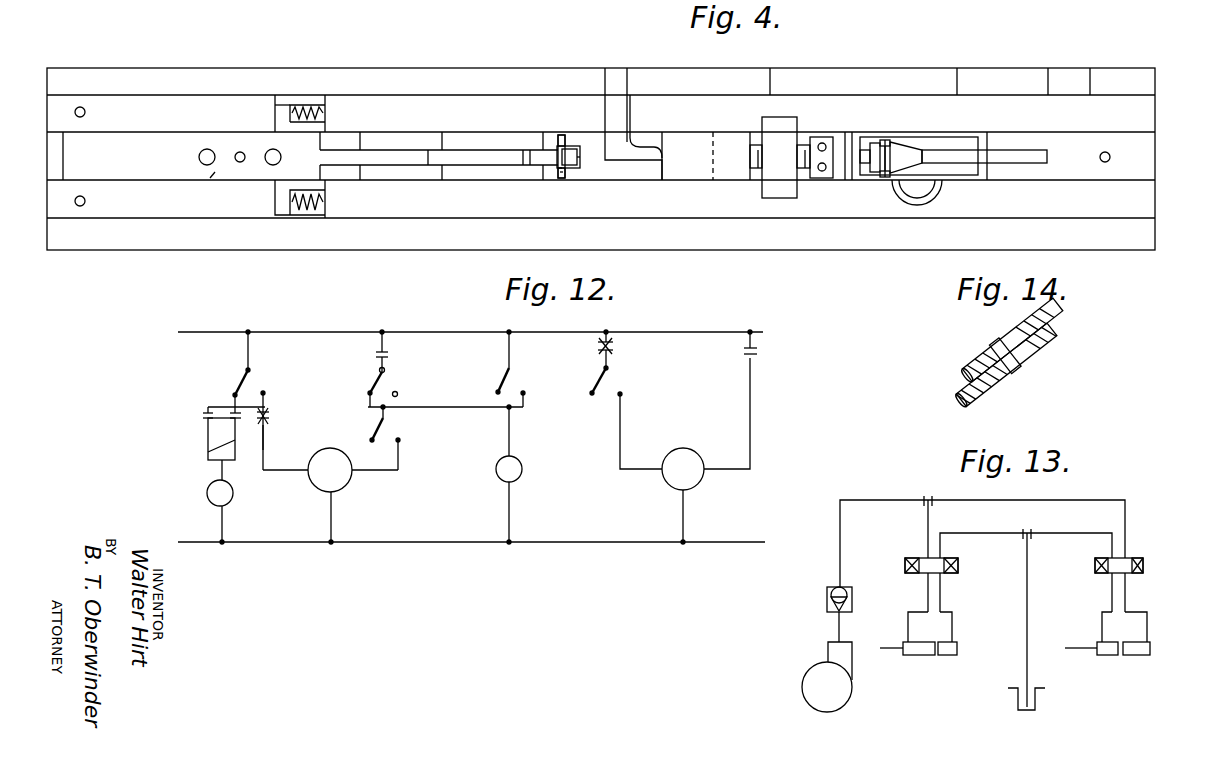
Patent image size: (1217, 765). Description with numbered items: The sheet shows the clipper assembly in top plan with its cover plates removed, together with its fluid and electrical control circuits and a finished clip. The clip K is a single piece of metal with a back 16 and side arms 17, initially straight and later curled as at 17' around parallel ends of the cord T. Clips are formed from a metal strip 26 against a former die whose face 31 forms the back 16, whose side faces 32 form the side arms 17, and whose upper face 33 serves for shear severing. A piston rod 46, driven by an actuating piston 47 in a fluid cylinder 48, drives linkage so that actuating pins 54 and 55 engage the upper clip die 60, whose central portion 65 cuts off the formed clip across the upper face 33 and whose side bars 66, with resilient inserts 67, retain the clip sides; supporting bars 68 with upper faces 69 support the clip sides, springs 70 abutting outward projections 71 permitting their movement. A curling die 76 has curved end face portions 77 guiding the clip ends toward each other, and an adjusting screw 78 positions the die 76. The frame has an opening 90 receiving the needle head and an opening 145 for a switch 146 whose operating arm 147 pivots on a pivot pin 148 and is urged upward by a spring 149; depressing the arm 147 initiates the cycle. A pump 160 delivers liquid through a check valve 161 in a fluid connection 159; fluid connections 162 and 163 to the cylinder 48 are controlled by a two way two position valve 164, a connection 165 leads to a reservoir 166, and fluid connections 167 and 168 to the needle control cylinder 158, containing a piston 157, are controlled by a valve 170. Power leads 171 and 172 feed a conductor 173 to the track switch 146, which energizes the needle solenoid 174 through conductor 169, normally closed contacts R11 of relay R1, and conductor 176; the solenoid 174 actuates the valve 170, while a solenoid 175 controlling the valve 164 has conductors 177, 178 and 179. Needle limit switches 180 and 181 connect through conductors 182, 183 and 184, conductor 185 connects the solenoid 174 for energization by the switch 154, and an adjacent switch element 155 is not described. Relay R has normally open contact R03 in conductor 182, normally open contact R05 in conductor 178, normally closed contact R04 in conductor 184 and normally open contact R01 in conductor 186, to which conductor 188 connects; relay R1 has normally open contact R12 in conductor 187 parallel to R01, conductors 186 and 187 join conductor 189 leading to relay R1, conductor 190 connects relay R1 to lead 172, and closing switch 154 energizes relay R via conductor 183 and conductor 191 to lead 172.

In FIG. 4, the back 16 is at (558, 140).
In FIG. 4, the side arms 17 is at (580, 141).
In FIG. 14, the curled side arms 17' is at (1020, 353).
In FIG. 4, the elongated metal strip 26 is at (560, 172).
In FIG. 4, the face 31 is at (558, 168).
In FIG. 4, the side faces 32 is at (575, 148).
In FIG. 4, the upper face 33 is at (580, 160).
In FIG. 13, the piston rod 46 is at (897, 646).
In FIG. 13, the actuating piston 47 is at (945, 655).
In FIG. 13, the fluid cylinder 48 is at (921, 655).
In FIG. 4, the actuating pin 54 is at (207, 150).
In FIG. 4, the actuating pin 55 is at (268, 164).
In FIG. 4, the upper clip die 60 is at (213, 174).
In FIG. 4, the central portion 65 is at (405, 155).
In FIG. 4, the side bars 66 is at (386, 174).
In FIG. 4, the resilient inserts 67 is at (350, 175).
In FIG. 4, the supporting bars 68 is at (468, 128).
In FIG. 4, the upper faces 69 is at (562, 142).
In FIG. 4, the springs 70 is at (308, 105).
In FIG. 4, the outward projections 71 is at (275, 100).
In FIG. 4, the curling die 76 is at (698, 148).
In FIG. 4, the curved end face portions 77 is at (657, 150).
In FIG. 4, the adjusting screw 78 is at (830, 137).
In FIG. 4, the opening 90 is at (616, 100).
In FIG. 4, the opening 145 is at (970, 137).
In FIG. 4, the switch 146 is at (916, 146).
In FIG. 12, the switch 146 is at (250, 378).
In FIG. 4, the operating arm 147 is at (1020, 156).
In FIG. 4, the pivot pin 148 is at (882, 140).
In FIG. 4, the spring 149 is at (888, 143).
In FIG. 12, the switch 154 is at (505, 380).
In FIG. 12, the switch blade 155 is at (386, 433).
In FIG. 13, the piston 157 is at (1128, 655).
In FIG. 13, the needle control cylinder 158 is at (1113, 655).
In FIG. 13, the fluid connection 159 is at (878, 500).
In FIG. 13, the pump 160 is at (851, 696).
In FIG. 13, the check valve 161 is at (827, 598).
In FIG. 13, the fluid connection 162 is at (928, 600).
In FIG. 13, the fluid connection 163 is at (940, 599).
In FIG. 13, the two way two position valve 164 is at (914, 558).
In FIG. 13, the connection 165 is at (1027, 623).
In FIG. 13, the reservoir 166 is at (1036, 700).
In FIG. 13, the fluid connection 167 is at (1112, 593).
In FIG. 13, the fluid connection 168 is at (1125, 592).
In FIG. 12, the conductor 169 is at (268, 436).
In FIG. 13, the two way two position valve 170 is at (1143, 561).
In FIG. 12, the power lead 171 is at (212, 332).
In FIG. 12, the power lead 172 is at (196, 542).
In FIG. 12, the conductor 173 is at (248, 354).
In FIG. 12, the needle solenoid 174 is at (345, 450).
In FIG. 12, the solenoid 175 is at (704, 483).
In FIG. 12, the conductor 176 is at (331, 519).
In FIG. 12, the conductor 177 is at (620, 432).
In FIG. 12, the conductor 178 is at (752, 420).
In FIG. 12, the conductor 179 is at (685, 519).
In FIG. 12, the needle position responsive switch 180 is at (377, 385).
In FIG. 12, the needle position responsive switch 181 is at (605, 383).
In FIG. 12, the conductor 182 is at (388, 370).
In FIG. 12, the conductor 183 is at (400, 396).
In FIG. 12, the conductor 184 is at (612, 335).
In FIG. 12, the conductor 185 is at (400, 466).
In FIG. 12, the conductor 186 is at (208, 445).
In FIG. 12, the conductor 187 is at (208, 452).
In FIG. 12, the conductor 188 is at (268, 392).
In FIG. 12, the conductor 189 is at (222, 470).
In FIG. 12, the conductor 190 is at (224, 531).
In FIG. 12, the conductor 191 is at (509, 519).
In FIG. 12, the relay R is at (523, 471).
In FIG. 12, the relay R1 is at (234, 495).
In FIG. 12, the normally open contact R01 is at (204, 416).
In FIG. 12, the normally open contact R03 is at (403, 351).
In FIG. 12, the normally closed contact R04 is at (629, 351).
In FIG. 12, the normally open contact R05 is at (772, 343).
In FIG. 12, the normally closed contact R11 is at (285, 411).
In FIG. 12, the normally open contact R12 is at (232, 410).
In FIG. 14, the cord T is at (978, 360).
In FIG. 14, the clip K is at (1017, 360).